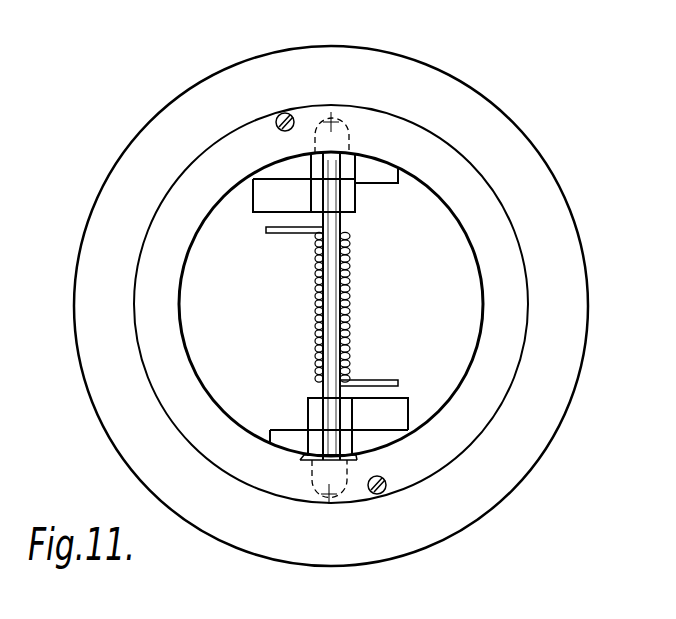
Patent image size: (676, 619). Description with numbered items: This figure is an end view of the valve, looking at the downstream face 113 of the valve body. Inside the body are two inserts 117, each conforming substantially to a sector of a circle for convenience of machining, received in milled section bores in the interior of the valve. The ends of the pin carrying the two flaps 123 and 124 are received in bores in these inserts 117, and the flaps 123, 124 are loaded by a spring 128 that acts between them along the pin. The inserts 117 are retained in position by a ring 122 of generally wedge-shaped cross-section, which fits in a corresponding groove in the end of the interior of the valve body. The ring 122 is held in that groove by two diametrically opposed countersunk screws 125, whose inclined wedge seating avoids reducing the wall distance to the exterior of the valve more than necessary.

The downstream face 113 is at (490, 465).
The inserts 117 is at (331, 110).
The ring 122 is at (242, 462).
The flap 123 is at (434, 317).
The flap 124 is at (272, 317).
The countersunk screws 125 is at (281, 113).
The spring 128 is at (353, 262).